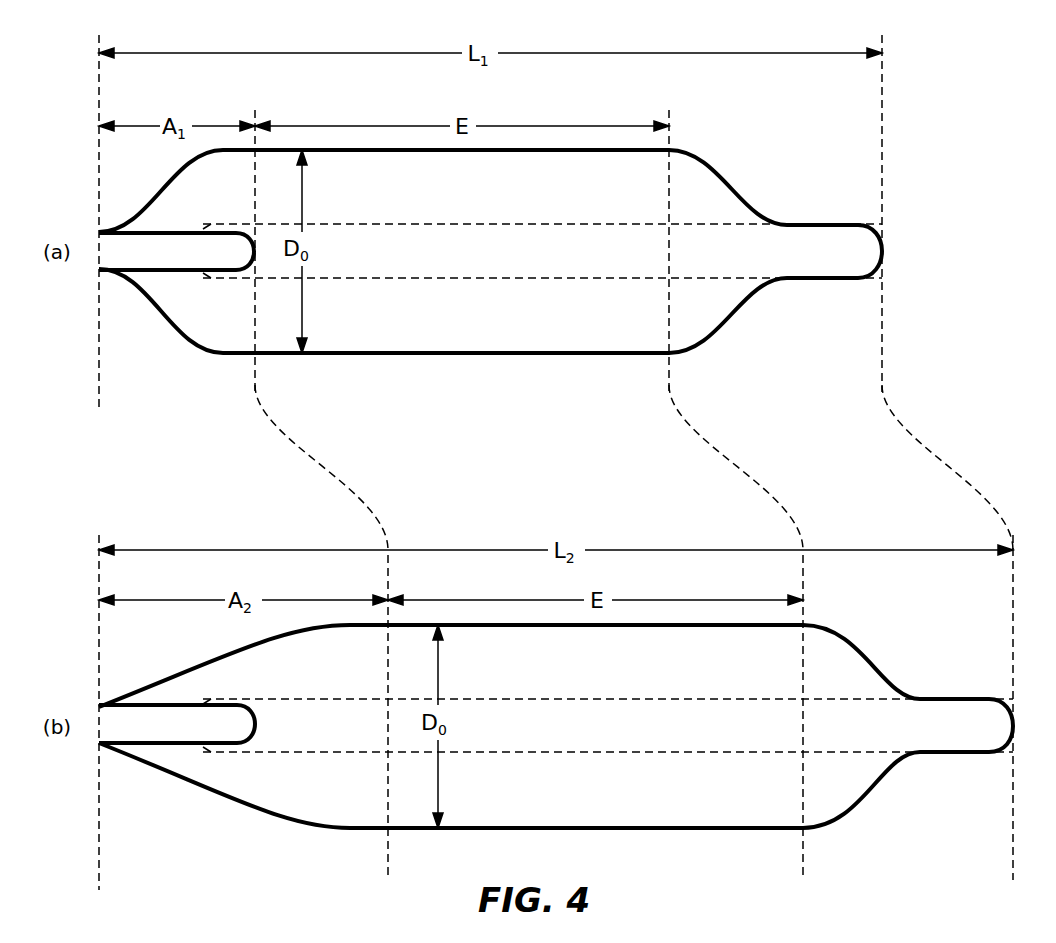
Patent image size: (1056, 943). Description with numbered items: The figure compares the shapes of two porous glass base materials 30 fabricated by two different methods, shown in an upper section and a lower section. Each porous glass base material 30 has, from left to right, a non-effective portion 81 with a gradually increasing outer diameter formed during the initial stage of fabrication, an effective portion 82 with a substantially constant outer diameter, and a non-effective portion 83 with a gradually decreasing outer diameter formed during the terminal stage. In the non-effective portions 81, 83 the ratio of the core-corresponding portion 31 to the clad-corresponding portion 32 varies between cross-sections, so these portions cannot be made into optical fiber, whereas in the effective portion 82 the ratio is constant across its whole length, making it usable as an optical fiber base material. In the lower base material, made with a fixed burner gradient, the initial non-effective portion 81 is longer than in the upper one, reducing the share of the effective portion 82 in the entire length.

The porous glass base material 30 is at (853, 146).
The core-corresponding portion 31 is at (840, 224).
The clad-corresponding portion 32 is at (752, 197).
The non-effective portion 81 is at (99, 372).
The effective portion 82 is at (255, 372).
The non-effective portion 83 is at (882, 372).